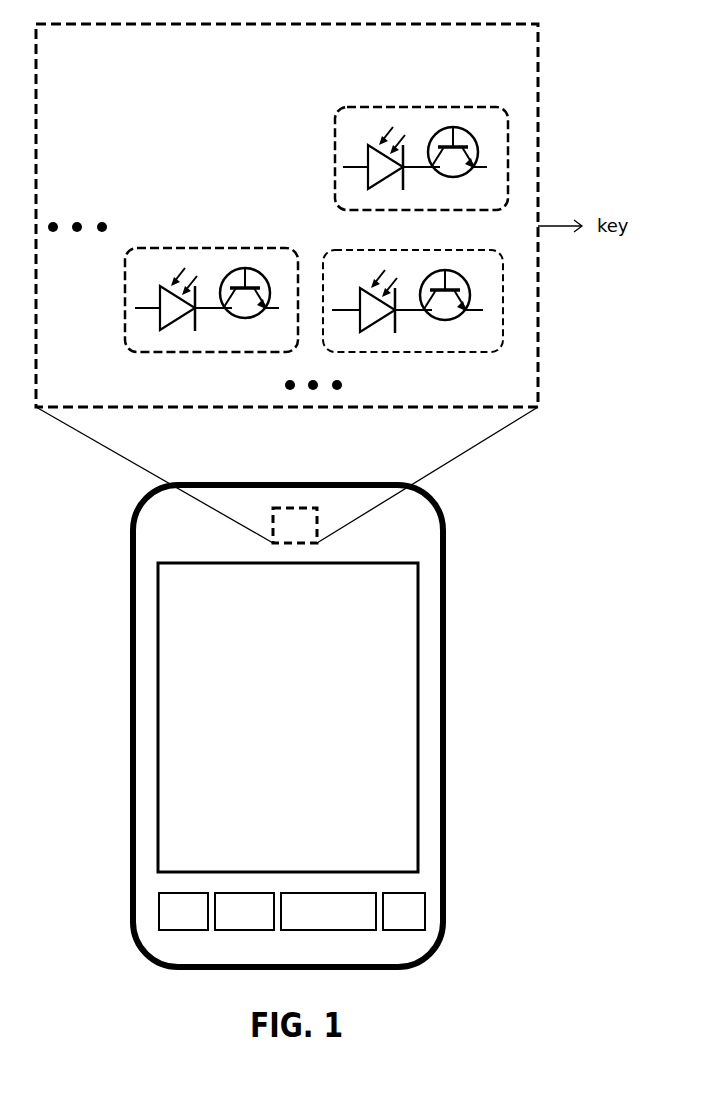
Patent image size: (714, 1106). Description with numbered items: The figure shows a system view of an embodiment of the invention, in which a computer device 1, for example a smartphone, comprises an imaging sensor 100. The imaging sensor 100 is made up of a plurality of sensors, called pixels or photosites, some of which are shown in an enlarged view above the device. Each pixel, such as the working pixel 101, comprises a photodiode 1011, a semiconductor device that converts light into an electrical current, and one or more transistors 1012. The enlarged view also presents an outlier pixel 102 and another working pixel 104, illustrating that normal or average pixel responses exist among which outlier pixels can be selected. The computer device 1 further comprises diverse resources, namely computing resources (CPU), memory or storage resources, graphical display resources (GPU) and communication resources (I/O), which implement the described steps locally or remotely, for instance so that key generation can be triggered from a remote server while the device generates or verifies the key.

The computer device 1 is at (450, 505).
The imaging sensor 100 is at (478, 24).
The working pixel 101 is at (421, 127).
The outlier pixel 102 is at (440, 245).
The working pixel 104 is at (242, 248).
The photodiode 1011 is at (382, 167).
The transistor 1012 is at (433, 165).